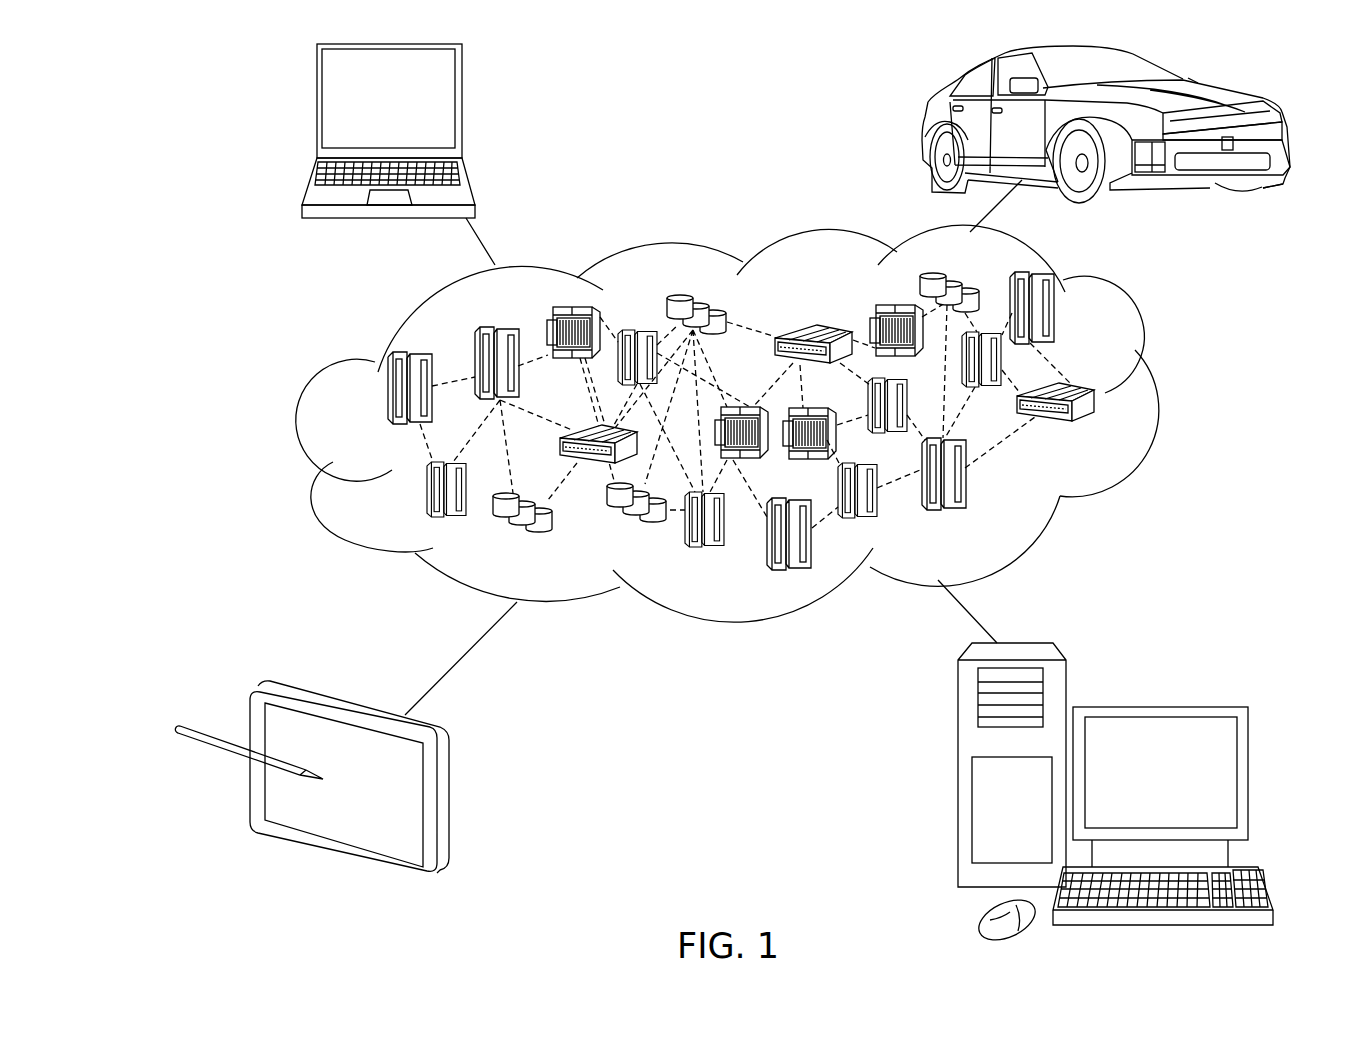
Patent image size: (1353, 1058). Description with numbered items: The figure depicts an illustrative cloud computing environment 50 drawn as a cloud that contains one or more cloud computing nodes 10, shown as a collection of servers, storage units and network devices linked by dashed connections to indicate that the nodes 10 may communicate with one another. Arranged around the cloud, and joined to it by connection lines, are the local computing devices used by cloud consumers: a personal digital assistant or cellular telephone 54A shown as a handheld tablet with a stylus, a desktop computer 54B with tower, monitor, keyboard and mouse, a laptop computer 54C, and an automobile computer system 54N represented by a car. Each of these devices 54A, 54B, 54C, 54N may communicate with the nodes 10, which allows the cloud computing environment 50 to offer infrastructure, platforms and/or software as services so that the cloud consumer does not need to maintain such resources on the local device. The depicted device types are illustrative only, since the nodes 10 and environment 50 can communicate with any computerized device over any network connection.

The cloud computing nodes 10 is at (1097, 431).
The cloud computing environment 50 is at (1157, 398).
The personal digital assistant or cellular telephone 54A is at (448, 803).
The desktop computer 54B is at (1158, 707).
The laptop computer 54C is at (462, 108).
The automobile computer system 54N is at (926, 128).